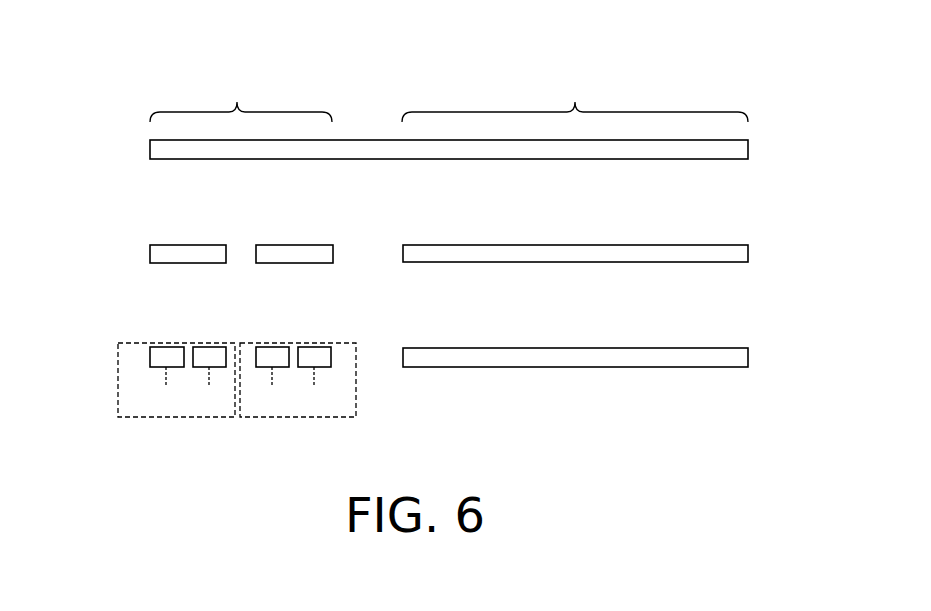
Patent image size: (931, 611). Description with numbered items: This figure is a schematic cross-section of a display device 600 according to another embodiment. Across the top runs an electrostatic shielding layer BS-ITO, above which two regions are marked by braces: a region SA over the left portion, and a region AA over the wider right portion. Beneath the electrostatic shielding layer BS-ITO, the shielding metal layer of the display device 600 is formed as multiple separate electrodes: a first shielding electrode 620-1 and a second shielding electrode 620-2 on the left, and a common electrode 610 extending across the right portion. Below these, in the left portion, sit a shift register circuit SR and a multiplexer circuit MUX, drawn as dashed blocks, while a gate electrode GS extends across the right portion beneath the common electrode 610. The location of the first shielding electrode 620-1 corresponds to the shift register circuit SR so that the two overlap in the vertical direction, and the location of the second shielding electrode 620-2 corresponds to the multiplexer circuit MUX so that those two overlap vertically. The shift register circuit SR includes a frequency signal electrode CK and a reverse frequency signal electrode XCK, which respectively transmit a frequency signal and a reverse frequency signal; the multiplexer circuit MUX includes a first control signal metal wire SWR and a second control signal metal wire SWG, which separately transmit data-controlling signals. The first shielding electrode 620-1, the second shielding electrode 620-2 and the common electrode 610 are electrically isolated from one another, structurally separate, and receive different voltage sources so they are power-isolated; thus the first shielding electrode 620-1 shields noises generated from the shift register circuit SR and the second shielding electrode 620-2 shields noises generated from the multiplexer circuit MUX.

The display device 600 is at (812, 500).
The common electrode 610 is at (750, 259).
The first shielding electrode 620-1 is at (188, 245).
The second shielding electrode 620-2 is at (323, 245).
The electrostatic shielding layer BS-ITO is at (150, 150).
The shift register area SA is at (241, 95).
The active area AA is at (575, 95).
The shift register circuit SR is at (148, 380).
The multiplexer circuit MUX is at (334, 380).
The frequency signal electrode CK is at (165, 382).
The reverse frequency signal electrode XCK is at (209, 382).
The first control signal metal wire SWR is at (267, 382).
The second control signal metal wire SWG is at (325, 382).
The gate electrode GS is at (750, 365).